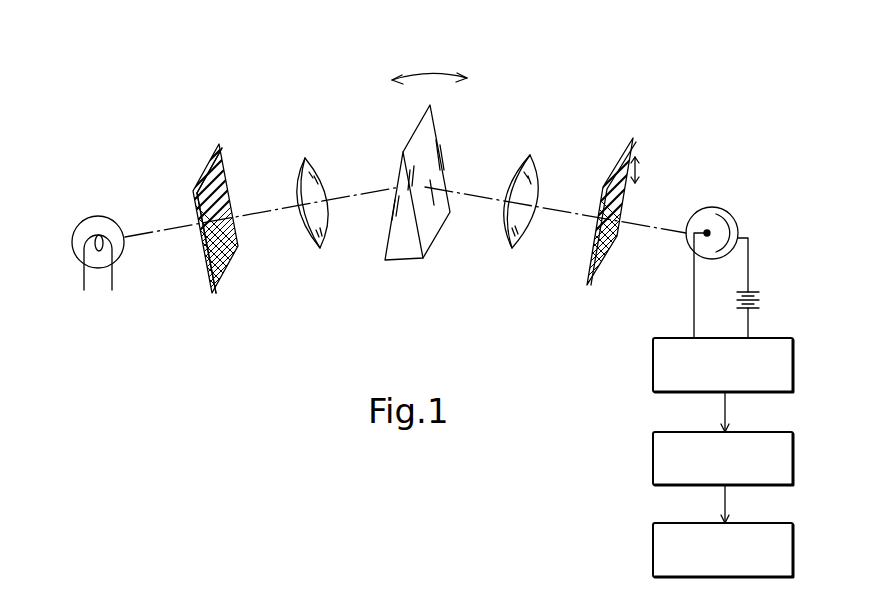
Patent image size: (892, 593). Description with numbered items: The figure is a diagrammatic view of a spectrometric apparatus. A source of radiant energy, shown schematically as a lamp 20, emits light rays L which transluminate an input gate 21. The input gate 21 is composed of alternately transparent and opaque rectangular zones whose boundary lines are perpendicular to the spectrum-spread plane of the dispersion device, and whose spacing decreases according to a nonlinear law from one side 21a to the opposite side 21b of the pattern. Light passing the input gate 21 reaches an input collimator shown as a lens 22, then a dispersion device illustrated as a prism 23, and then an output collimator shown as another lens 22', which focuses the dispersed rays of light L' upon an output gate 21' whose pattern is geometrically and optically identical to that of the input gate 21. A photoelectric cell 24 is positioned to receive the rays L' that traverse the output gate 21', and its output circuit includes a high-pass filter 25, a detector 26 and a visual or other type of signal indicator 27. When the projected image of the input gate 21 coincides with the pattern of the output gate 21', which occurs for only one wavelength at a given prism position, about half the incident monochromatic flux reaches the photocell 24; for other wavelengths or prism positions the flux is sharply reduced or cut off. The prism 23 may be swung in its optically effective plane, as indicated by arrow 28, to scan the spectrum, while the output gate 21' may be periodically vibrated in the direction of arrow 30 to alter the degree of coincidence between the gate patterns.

The lamp 20 is at (92, 216).
The input gate 21 is at (215, 240).
The one side of the rectangular pattern 21a is at (208, 162).
The opposite side of the rectangular pattern 21b is at (216, 290).
The input collimator lens 22 is at (317, 228).
The prism 23 is at (405, 253).
The output collimator lens 22' is at (529, 223).
The output gate 21' is at (615, 245).
The photoelectric cell 24 is at (728, 210).
The high-pass filter 25 is at (658, 368).
The detector 26 is at (658, 455).
The signal indicator 27 is at (658, 546).
The arrow 28 is at (430, 75).
The arrow 30 is at (640, 170).
The light rays L is at (262, 195).
The dispersed rays of light L' is at (555, 193).